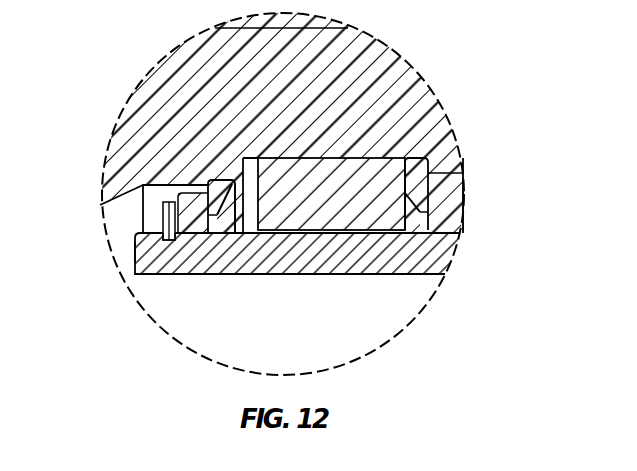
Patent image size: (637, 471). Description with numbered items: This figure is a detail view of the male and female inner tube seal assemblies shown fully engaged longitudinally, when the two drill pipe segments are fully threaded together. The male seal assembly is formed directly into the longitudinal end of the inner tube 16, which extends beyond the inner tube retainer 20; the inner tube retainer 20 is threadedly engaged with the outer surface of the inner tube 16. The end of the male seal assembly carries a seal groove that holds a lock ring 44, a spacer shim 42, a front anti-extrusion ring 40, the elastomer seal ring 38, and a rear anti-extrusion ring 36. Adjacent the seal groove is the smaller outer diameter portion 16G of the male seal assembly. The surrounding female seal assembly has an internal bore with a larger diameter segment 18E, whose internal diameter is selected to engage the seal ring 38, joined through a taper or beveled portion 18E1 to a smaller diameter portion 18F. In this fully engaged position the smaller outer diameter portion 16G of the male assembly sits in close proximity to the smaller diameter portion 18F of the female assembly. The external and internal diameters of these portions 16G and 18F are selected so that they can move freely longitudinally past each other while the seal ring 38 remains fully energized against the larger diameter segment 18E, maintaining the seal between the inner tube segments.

The inner tube 16 is at (440, 247).
The smaller outer diameter portion 16G is at (135, 244).
The larger diameter segment 18E is at (403, 157).
The taper or beveled portion 18E1 is at (224, 178).
The smaller diameter portion 18F is at (160, 184).
The inner tube retainer 20 is at (463, 213).
The rear anti-extrusion ring 36 is at (462, 173).
The seal ring 38 is at (313, 215).
The front anti-extrusion ring 40 is at (226, 215).
The spacer shim 42 is at (170, 243).
The lock ring 44 is at (162, 218).